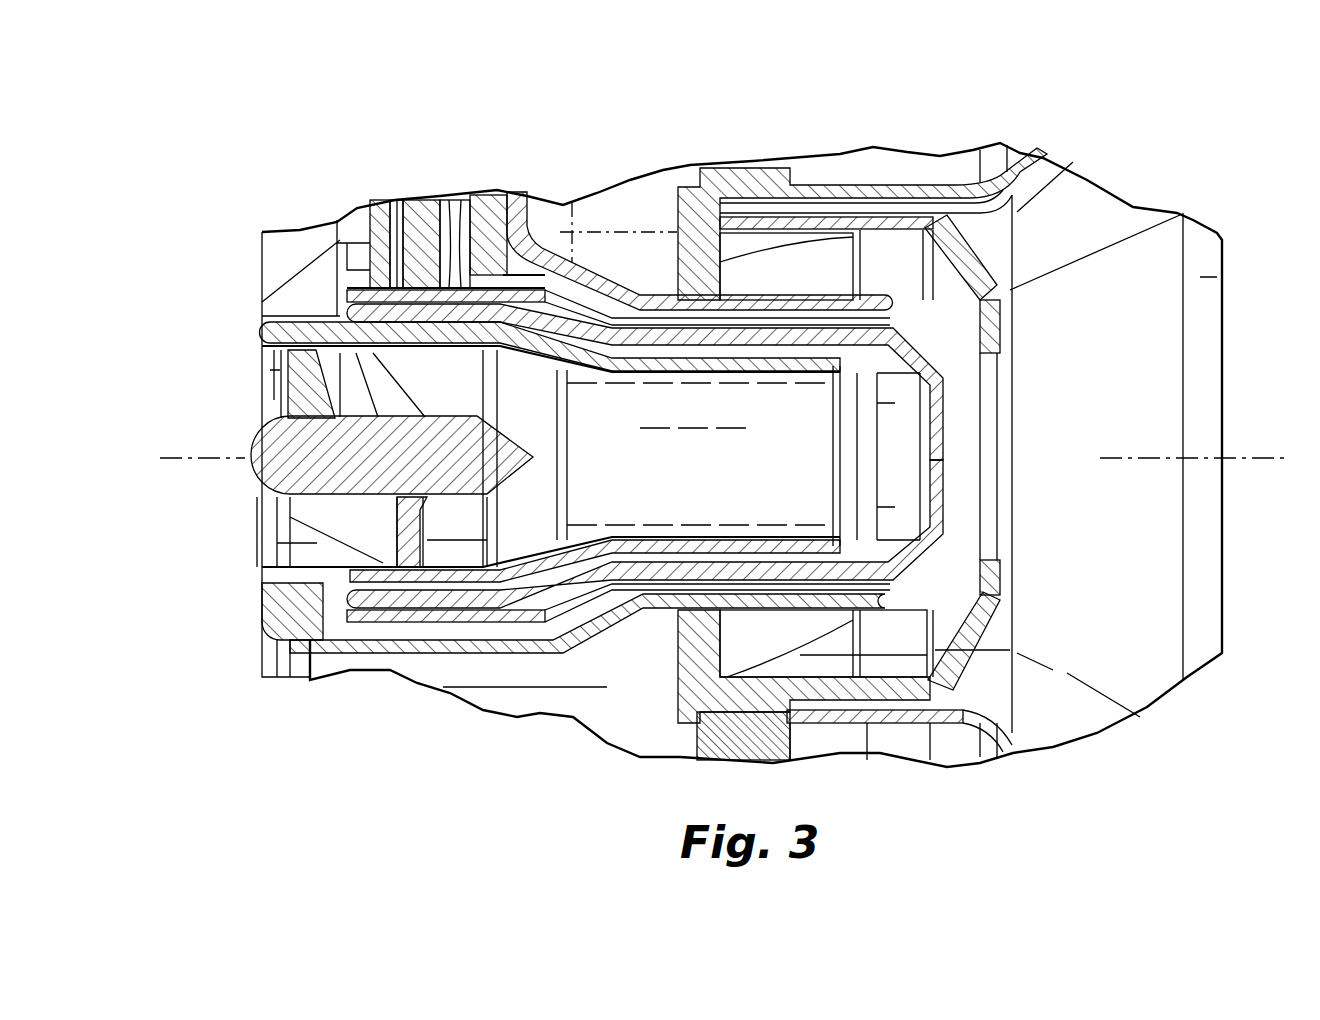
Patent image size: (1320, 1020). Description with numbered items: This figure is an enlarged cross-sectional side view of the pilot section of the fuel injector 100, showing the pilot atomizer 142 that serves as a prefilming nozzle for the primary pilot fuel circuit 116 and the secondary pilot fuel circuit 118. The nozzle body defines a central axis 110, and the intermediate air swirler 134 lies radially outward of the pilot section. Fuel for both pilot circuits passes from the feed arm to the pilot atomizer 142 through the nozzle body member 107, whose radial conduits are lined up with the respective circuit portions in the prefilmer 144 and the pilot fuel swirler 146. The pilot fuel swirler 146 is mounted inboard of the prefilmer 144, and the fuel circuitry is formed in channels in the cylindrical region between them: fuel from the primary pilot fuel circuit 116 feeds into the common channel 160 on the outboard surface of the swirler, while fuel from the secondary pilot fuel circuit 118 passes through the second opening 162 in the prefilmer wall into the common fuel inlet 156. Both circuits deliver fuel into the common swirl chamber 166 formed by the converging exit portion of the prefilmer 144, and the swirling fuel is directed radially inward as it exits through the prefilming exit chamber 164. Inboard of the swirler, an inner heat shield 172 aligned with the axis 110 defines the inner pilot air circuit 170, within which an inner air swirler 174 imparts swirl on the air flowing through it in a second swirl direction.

The fluid coupling assembly 100 is at (225, 629).
The pilot atomizer 142 is at (223, 633).
The nozzle body member 107 is at (418, 200).
The central axis 110 is at (1262, 455).
The primary pilot fuel circuit 116 is at (393, 212).
The secondary pilot fuel circuit 118 is at (543, 258).
The intermediate air swirler 134 is at (980, 268).
The prefilmer 144 is at (932, 340).
The pilot fuel swirler 146 is at (907, 365).
The common fuel inlet 156 is at (418, 362).
The common channel 160 is at (350, 213).
The second opening 162 is at (450, 215).
The prefilming exit chamber 164 is at (930, 563).
The swirl chamber 166 is at (836, 330).
The inner pilot air circuit 170 is at (712, 476).
The inner heat shield 172 is at (262, 330).
The inner air swirler 174 is at (243, 455).